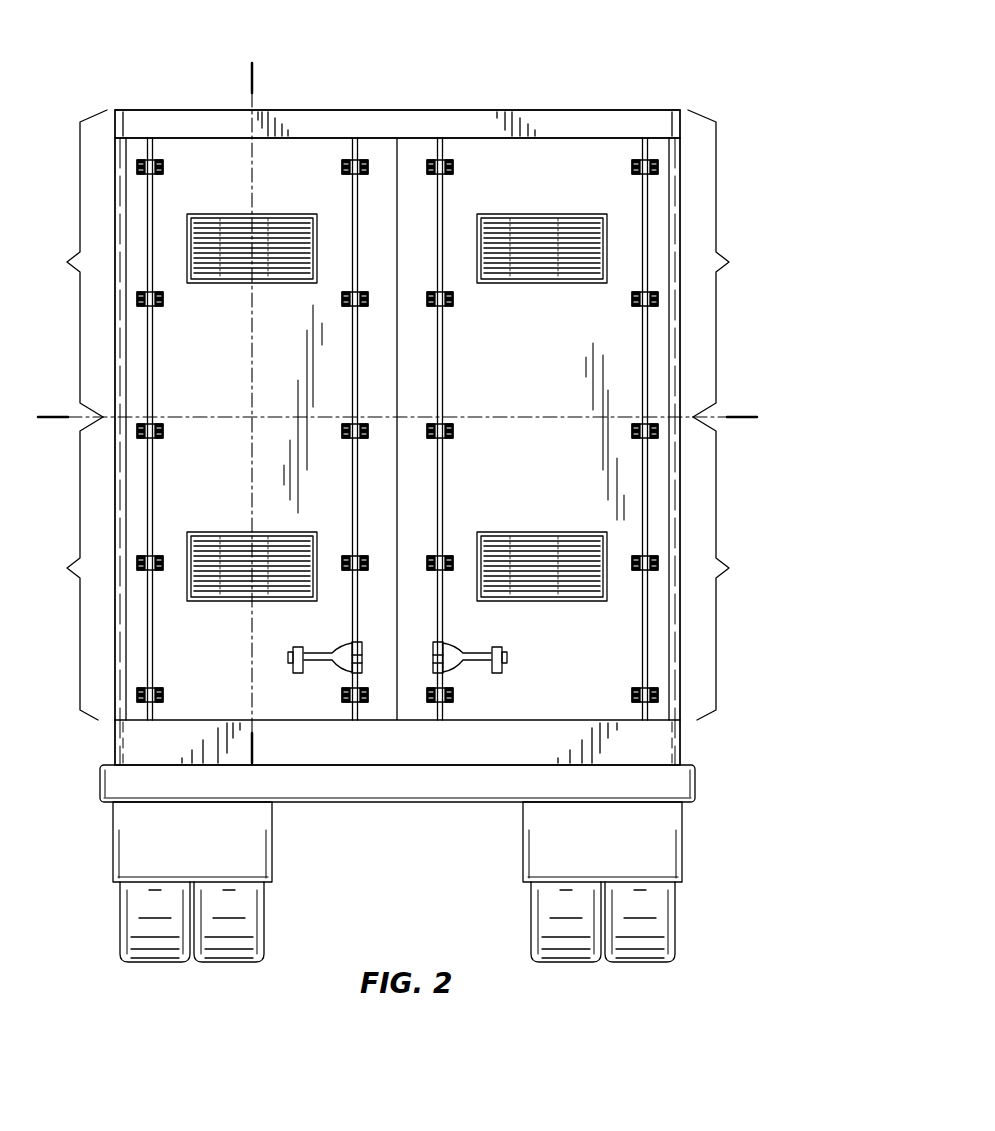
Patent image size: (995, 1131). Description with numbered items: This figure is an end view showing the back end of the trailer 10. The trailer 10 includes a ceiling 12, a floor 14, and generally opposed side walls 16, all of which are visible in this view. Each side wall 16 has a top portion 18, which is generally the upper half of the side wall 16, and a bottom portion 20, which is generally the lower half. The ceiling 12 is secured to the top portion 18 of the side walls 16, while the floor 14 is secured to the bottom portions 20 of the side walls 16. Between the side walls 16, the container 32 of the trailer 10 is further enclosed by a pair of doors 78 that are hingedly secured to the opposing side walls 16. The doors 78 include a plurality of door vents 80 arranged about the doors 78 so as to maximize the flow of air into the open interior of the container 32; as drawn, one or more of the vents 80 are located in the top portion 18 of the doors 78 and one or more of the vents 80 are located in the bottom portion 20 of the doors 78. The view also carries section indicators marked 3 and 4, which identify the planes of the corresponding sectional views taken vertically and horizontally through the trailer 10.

The trailer 10 is at (754, 148).
The ceiling 12 is at (394, 110).
The floor 14 is at (385, 803).
The side walls 16 is at (113, 377).
The top portion 18 is at (399, 263).
The bottom portion 20 is at (399, 568).
The container 32 is at (631, 68).
The doors 78 is at (208, 396).
The door vents 80 is at (225, 283).
The section line 3- 3 is at (262, 745).
The section line 4- 4 is at (741, 406).